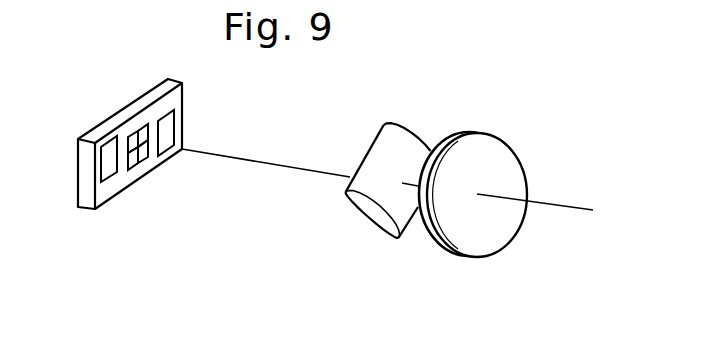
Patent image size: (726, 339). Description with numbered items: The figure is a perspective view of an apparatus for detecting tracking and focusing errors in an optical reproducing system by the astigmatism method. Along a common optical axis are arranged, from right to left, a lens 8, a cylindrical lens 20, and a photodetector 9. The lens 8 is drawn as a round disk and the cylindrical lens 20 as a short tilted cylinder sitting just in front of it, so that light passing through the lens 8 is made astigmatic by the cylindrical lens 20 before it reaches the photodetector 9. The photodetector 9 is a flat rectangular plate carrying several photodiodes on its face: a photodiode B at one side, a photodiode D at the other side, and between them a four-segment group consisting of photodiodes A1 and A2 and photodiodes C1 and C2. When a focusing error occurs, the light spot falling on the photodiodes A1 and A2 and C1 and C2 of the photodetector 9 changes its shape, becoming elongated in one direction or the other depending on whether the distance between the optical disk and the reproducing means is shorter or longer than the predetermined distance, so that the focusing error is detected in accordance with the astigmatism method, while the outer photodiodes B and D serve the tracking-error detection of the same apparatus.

The photodetector 9 is at (87, 200).
The photodiode B is at (102, 165).
The photodiode A1 is at (132, 142).
The photodiode A2 is at (133, 162).
The photodiode C1 is at (143, 137).
The photodiode C2 is at (145, 150).
The photodiode D is at (169, 133).
The cylindrical lens 20 is at (375, 215).
The lens 8 is at (503, 158).